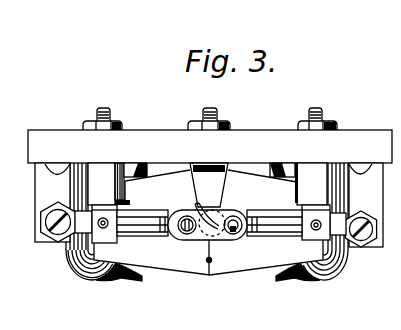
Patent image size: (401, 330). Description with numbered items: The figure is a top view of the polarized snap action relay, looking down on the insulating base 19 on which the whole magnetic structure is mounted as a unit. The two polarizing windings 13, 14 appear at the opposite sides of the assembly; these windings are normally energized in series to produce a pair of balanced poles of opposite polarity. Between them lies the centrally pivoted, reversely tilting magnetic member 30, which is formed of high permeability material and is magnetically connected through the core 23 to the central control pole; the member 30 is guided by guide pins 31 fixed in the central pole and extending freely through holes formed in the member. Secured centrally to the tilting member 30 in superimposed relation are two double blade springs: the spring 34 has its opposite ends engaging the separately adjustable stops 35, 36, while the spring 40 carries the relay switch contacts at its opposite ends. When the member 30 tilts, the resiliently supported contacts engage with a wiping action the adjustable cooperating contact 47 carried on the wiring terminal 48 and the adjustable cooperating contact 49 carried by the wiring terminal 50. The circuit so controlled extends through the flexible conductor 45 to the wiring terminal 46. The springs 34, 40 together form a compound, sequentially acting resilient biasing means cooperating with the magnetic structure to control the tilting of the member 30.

The base 19 is at (246, 132).
The wiring terminal 48 is at (100, 170).
The wiring terminal 50 is at (320, 168).
The double blade spring 34 is at (135, 215).
The double blade spring 40 is at (148, 223).
The wiring terminal 46 is at (224, 193).
The adjustable stop 35 is at (57, 242).
The adjustable stop 36 is at (359, 246).
The adjustable cooperating contact 47 is at (115, 237).
The adjustable cooperating contact 49 is at (303, 238).
The flexible conductor 45 is at (199, 239).
The core 23 is at (221, 238).
The polarizing winding 13 is at (115, 281).
The polarizing winding 14 is at (333, 279).
The tilting magnetic member 30 is at (252, 269).
The guide pin 31 is at (208, 276).